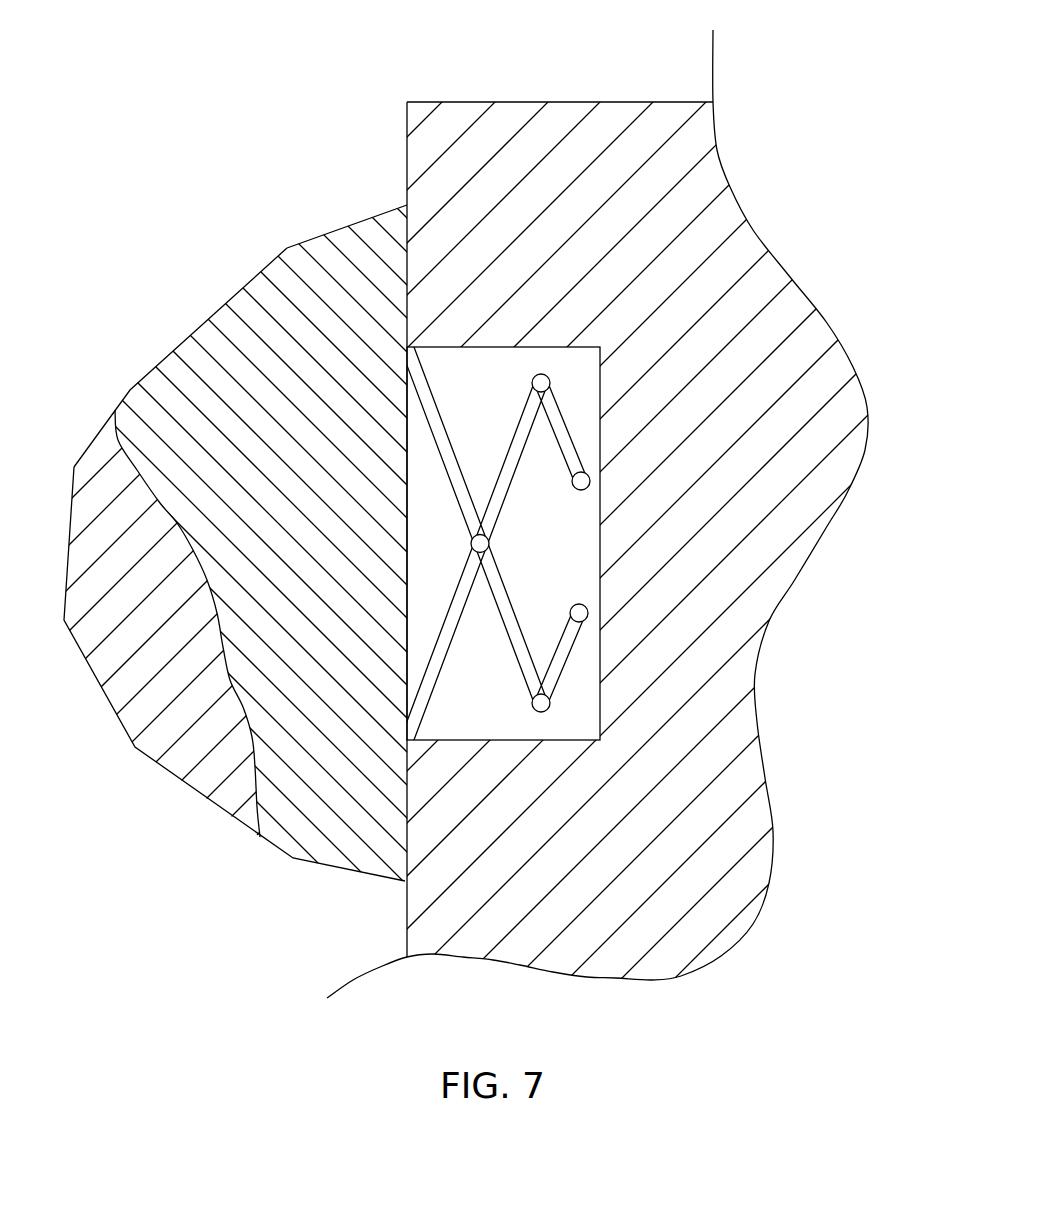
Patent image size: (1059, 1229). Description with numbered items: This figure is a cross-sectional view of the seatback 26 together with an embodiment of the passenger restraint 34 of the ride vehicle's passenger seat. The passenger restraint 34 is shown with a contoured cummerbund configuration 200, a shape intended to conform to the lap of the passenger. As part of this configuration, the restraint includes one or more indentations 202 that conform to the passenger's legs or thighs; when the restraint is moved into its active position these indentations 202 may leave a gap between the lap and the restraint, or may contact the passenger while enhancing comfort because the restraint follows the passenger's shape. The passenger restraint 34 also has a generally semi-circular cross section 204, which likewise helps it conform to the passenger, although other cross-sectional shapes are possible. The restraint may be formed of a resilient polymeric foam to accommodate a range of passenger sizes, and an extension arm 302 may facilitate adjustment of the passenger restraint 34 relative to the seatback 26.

The seatback 26 is at (700, 184).
The passenger restraint 34 is at (284, 204).
The contoured cummerbund configuration 200 is at (110, 728).
The indentations 202 is at (217, 633).
The semi-circular cross section 204 is at (130, 390).
The extension arm 302 is at (600, 549).